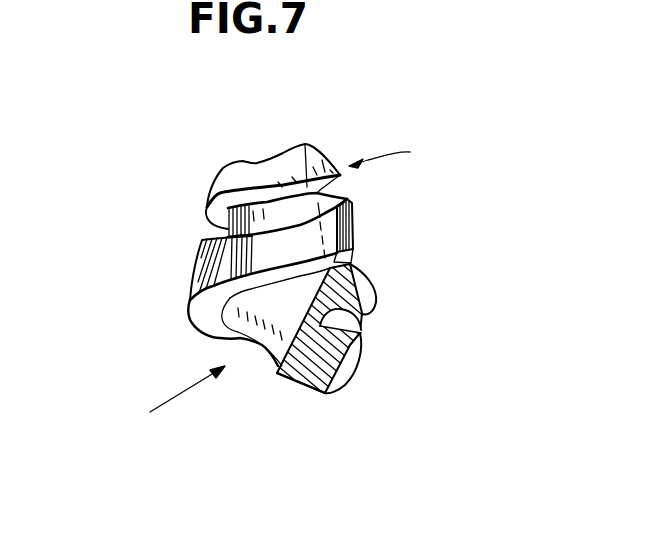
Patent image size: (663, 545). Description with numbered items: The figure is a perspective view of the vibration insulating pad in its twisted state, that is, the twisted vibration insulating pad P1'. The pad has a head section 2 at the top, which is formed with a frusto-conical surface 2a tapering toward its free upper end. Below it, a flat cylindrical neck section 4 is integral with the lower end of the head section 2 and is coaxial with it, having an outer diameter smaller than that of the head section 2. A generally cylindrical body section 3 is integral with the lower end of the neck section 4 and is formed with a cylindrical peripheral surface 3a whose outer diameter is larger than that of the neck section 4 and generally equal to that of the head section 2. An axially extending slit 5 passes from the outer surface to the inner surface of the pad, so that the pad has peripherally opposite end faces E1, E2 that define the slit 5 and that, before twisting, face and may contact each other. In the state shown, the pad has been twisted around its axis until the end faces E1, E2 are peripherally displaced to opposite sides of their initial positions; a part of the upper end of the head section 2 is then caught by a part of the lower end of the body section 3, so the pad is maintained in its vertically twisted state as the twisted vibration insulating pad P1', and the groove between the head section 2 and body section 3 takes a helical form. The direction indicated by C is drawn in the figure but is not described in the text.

The head section 2 is at (322, 148).
The frusto-conical surface 2a is at (232, 184).
The body section 3 is at (354, 233).
The cylindrical peripheral surface 3a is at (205, 262).
The neck section 4 is at (327, 192).
The slit 5 is at (323, 362).
The end face E1 is at (353, 222).
The end face E2 is at (306, 382).
The twisted vibration insulating pad P1' is at (403, 147).
The feed direction C is at (178, 392).